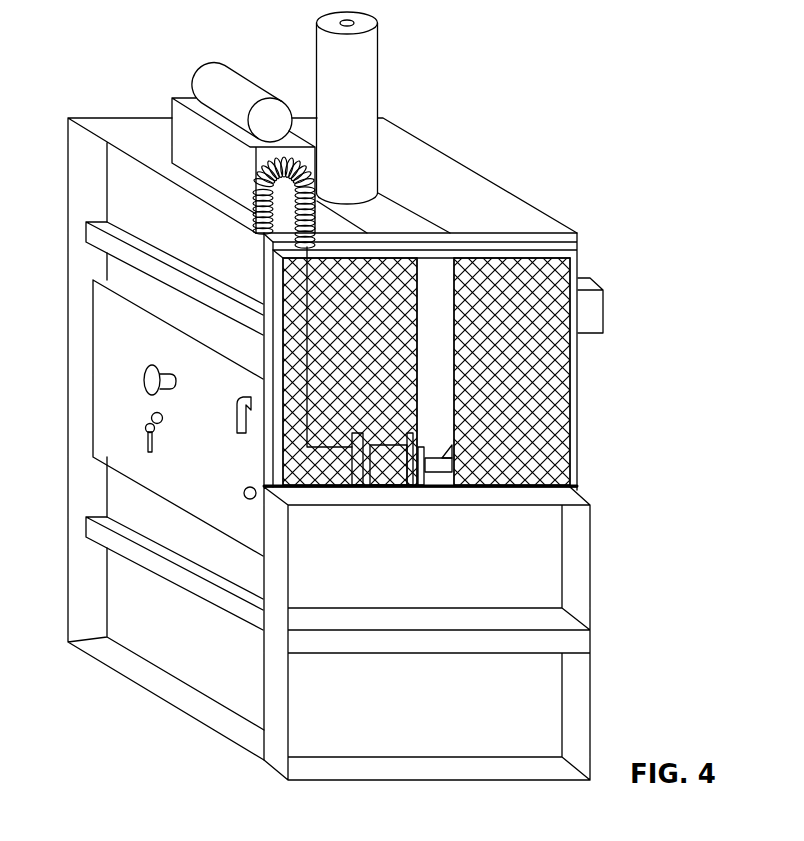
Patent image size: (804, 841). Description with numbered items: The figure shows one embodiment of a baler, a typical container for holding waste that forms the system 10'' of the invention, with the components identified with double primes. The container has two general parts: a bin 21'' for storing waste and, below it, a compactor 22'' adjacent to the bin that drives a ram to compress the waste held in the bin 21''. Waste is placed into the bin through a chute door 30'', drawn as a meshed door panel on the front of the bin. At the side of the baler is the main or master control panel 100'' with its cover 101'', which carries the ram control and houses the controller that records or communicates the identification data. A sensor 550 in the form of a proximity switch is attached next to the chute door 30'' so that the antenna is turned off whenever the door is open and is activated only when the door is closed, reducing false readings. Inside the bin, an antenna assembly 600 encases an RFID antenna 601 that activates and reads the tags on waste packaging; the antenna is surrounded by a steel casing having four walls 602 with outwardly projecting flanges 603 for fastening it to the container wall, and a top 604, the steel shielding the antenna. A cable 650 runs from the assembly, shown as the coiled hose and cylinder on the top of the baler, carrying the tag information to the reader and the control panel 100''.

The system 10'' is at (322, 402).
The main control panel 100'' is at (140, 426).
The cover 101'' is at (140, 418).
The bin 21'' is at (401, 276).
The compactor 22'' is at (461, 633).
The chute door 30'' is at (455, 360).
The sensor 550 is at (637, 297).
The antenna assembly 600 is at (378, 472).
The antenna 601 is at (417, 420).
The casing walls 602 is at (388, 472).
The flanges 603 is at (438, 465).
The top 604 is at (447, 451).
The cable 650 is at (320, 227).